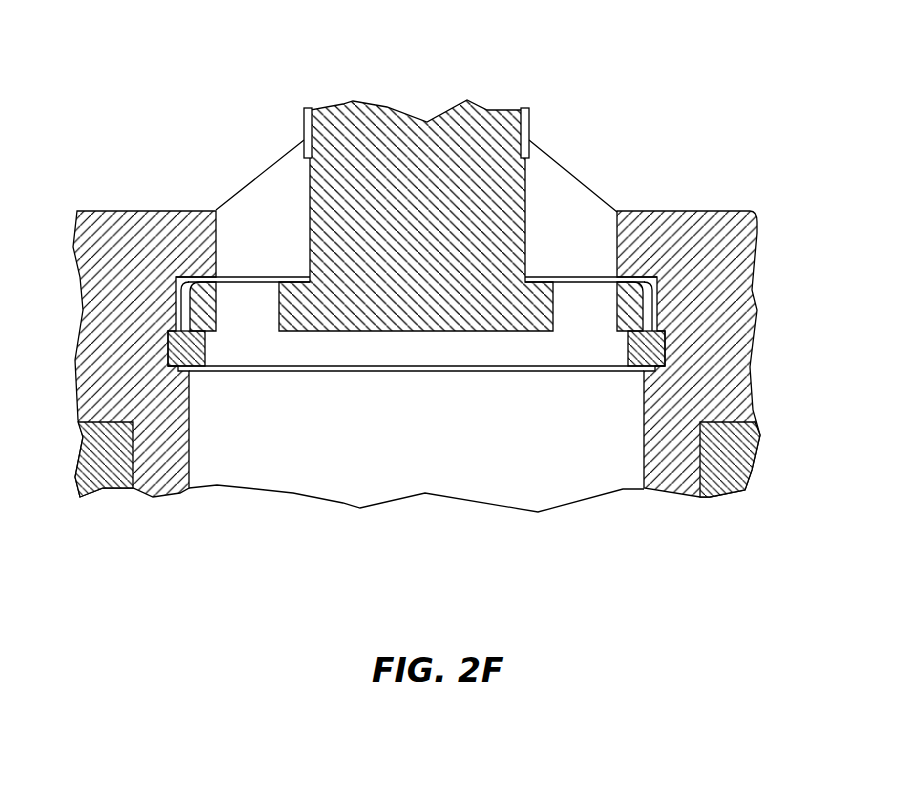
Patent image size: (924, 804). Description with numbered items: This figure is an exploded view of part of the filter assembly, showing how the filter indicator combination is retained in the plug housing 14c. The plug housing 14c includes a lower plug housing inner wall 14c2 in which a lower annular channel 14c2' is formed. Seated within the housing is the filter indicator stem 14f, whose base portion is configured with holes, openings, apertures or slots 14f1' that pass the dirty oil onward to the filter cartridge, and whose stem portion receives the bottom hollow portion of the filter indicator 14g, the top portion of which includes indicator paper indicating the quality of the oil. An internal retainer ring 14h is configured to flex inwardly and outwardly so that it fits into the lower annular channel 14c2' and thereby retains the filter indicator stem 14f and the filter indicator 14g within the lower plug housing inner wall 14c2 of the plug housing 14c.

The plug housing 14c is at (750, 232).
The lower plug housing inner wall 14c2 is at (383, 488).
The lower annular channel 14c2' is at (522, 369).
The filter indicator stem 14f is at (525, 193).
The holes, openings, apertures or slots 14f1' is at (535, 298).
The filter indicator 14g is at (532, 120).
The internal retainer ring 14h is at (653, 347).